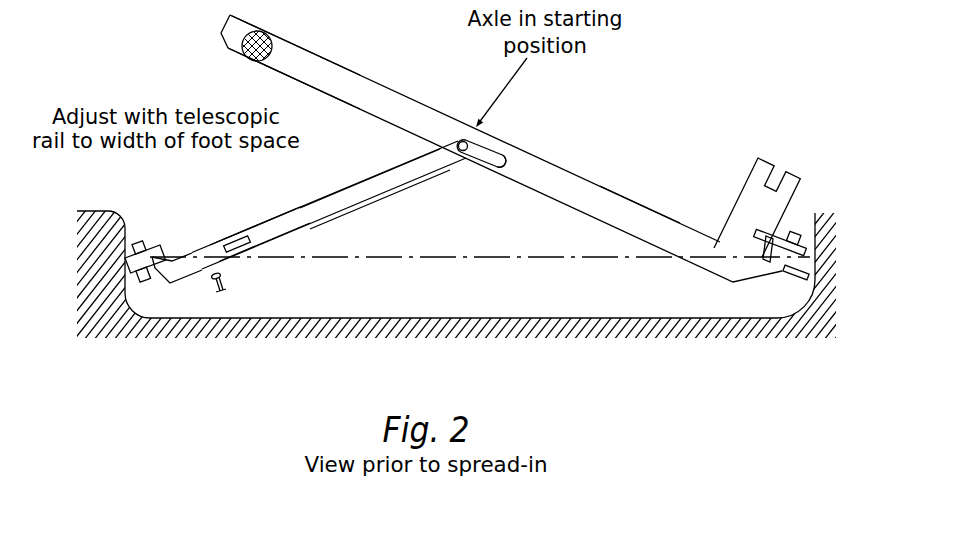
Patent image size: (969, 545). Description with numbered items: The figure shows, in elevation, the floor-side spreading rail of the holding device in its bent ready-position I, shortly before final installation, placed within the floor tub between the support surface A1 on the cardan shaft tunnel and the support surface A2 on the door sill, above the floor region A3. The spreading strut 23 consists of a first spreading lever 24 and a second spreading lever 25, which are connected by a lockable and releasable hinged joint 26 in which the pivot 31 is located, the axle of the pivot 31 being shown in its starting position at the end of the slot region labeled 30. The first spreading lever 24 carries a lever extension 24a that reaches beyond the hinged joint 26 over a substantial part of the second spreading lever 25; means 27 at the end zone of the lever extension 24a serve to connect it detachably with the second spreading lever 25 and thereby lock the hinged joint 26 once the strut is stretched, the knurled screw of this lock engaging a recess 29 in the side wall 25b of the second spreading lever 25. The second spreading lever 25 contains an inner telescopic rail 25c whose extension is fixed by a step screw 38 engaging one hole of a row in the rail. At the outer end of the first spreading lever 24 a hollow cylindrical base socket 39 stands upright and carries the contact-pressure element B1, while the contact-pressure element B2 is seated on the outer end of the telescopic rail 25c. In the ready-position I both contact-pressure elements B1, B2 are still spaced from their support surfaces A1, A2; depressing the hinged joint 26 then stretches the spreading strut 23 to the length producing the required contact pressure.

The spreading strut 23 is at (487, 180).
The first spreading lever 24 is at (581, 177).
The lever extension 24a is at (352, 72).
The second spreading lever 25 is at (302, 207).
The side wall 25b is at (234, 274).
The telescopic rail 25c is at (158, 270).
The hinged joint 26 is at (482, 140).
The means for detachably mechanically connecting 27 is at (245, 57).
The recess 29 is at (233, 234).
The slot end 30 is at (508, 162).
The pivot 31 is at (459, 143).
The step screw 38 is at (218, 292).
The base socket 39 is at (752, 176).
The support surface on the cardan shaft tunnel A1 is at (811, 212).
The support surface on the door sill A2 is at (132, 235).
The floor region A3 is at (516, 313).
The contact-pressure element B1 is at (797, 238).
The contact-pressure element B2 is at (132, 268).
The bent ready-position I is at (628, 114).